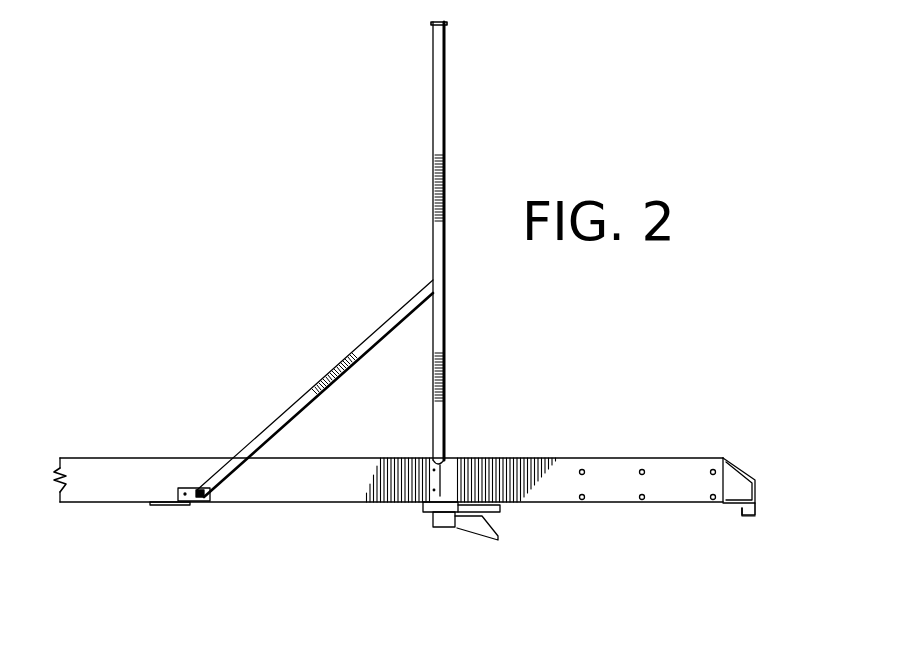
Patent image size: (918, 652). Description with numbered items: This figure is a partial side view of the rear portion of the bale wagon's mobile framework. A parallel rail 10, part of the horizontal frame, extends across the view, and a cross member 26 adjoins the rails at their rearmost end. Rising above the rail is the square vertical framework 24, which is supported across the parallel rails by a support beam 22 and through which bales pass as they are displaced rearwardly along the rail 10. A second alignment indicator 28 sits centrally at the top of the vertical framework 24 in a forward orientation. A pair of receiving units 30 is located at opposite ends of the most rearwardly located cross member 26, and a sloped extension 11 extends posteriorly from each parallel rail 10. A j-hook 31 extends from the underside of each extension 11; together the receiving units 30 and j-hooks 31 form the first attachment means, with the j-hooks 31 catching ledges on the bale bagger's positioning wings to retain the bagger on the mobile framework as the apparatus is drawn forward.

The parallel rail 10 is at (124, 475).
The sloped extension 11 is at (730, 460).
The support beam 22 is at (353, 352).
The square vertical framework 24 is at (432, 122).
The cross member 26 is at (432, 520).
The second alignment indicator 28 is at (432, 27).
The receiving unit 30 is at (465, 531).
The j-hook 31 is at (744, 518).